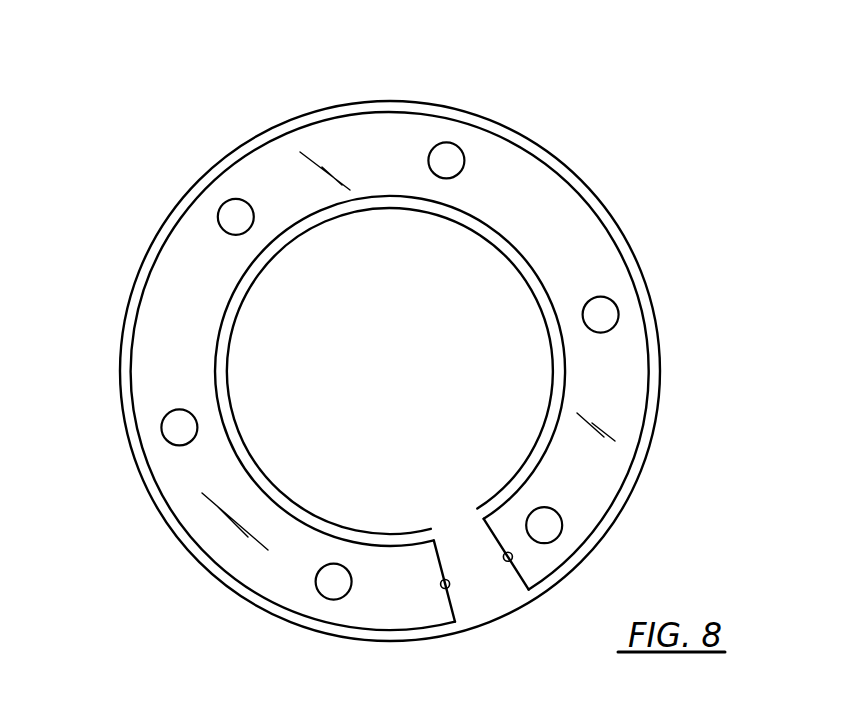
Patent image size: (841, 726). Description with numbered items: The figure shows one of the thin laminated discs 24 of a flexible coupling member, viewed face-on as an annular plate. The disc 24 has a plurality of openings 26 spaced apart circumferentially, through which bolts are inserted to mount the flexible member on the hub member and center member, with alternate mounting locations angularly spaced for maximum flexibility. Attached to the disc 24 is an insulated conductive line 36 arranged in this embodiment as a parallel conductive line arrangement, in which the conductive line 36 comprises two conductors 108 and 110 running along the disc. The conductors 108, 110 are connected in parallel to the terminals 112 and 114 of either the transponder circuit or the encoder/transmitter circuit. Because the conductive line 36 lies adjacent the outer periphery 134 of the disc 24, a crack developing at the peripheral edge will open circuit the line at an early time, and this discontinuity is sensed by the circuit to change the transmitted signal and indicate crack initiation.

The thin disc 24 is at (543, 149).
The openings 26 is at (231, 201).
The insulated conductive line 36 is at (298, 623).
The conductor 108 is at (650, 361).
The conductor 110 is at (565, 366).
The terminal 112 is at (505, 562).
The terminal 114 is at (441, 589).
The outer periphery 134 is at (138, 281).